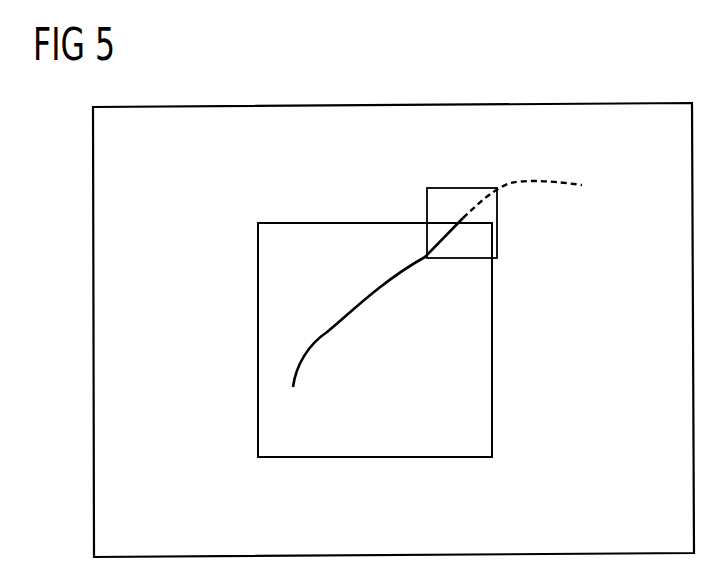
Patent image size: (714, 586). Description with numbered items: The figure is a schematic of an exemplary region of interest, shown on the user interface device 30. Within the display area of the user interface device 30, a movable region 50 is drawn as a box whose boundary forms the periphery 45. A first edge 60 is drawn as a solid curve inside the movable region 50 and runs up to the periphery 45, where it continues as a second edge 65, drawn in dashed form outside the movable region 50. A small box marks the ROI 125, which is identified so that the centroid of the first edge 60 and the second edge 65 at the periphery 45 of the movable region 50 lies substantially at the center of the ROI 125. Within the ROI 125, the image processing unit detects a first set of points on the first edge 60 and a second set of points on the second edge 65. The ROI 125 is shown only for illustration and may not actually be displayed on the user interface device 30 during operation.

The user interface device 30 is at (441, 78).
The periphery 45 is at (493, 375).
The movable region 50 is at (326, 209).
The first edge 60 is at (328, 330).
The second edge 65 is at (565, 182).
The region of interest (ROI) 125 is at (502, 225).